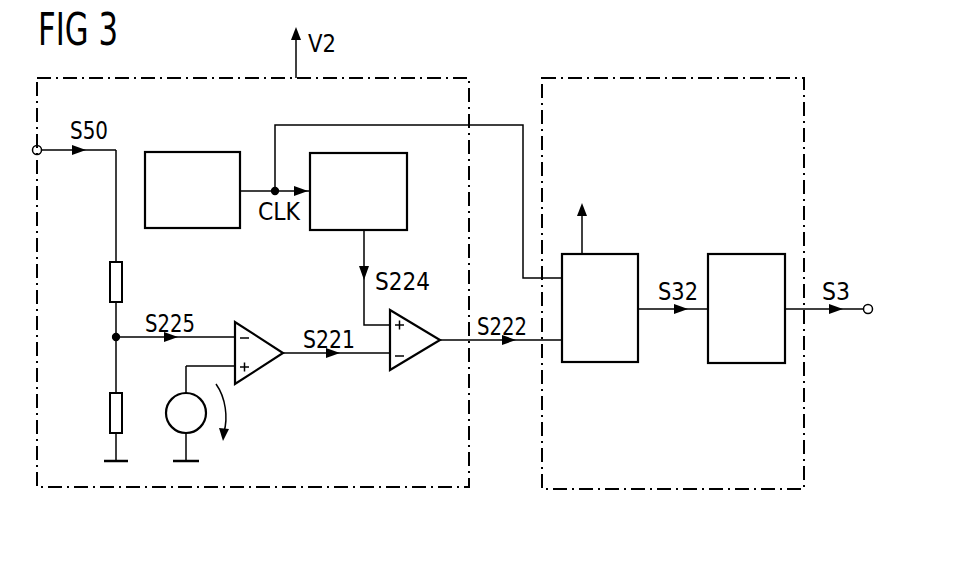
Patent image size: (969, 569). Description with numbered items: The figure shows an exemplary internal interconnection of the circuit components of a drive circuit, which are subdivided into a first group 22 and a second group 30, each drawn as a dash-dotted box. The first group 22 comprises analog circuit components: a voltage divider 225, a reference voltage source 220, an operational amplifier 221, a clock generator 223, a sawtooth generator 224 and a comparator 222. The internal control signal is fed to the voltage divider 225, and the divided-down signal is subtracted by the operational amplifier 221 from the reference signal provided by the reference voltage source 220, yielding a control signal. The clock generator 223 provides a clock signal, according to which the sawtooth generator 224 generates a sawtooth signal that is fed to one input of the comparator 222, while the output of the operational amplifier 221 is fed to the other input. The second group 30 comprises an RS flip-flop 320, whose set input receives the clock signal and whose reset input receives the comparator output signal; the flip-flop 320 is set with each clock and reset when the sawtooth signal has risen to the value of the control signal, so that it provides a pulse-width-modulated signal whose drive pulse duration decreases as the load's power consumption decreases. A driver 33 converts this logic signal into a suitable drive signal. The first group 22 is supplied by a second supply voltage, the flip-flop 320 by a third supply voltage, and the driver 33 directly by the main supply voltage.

The first group 22 is at (266, 488).
The second group 30 is at (700, 490).
The reference voltage source 220 is at (178, 398).
The operational amplifier 221 is at (272, 362).
The comparator 222 is at (410, 360).
The clock generator 223 is at (192, 152).
The sawtooth generator 224 is at (334, 230).
The voltage divider 225 is at (109, 297).
The RS flip-flop 320 is at (611, 254).
The driver 33 is at (759, 254).